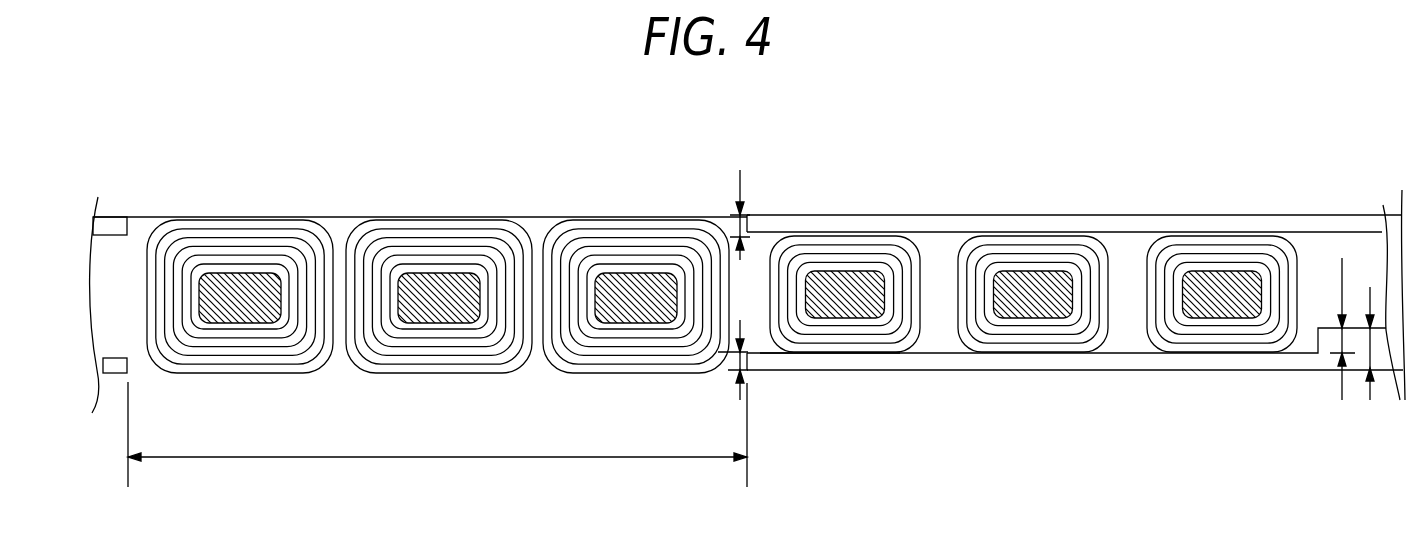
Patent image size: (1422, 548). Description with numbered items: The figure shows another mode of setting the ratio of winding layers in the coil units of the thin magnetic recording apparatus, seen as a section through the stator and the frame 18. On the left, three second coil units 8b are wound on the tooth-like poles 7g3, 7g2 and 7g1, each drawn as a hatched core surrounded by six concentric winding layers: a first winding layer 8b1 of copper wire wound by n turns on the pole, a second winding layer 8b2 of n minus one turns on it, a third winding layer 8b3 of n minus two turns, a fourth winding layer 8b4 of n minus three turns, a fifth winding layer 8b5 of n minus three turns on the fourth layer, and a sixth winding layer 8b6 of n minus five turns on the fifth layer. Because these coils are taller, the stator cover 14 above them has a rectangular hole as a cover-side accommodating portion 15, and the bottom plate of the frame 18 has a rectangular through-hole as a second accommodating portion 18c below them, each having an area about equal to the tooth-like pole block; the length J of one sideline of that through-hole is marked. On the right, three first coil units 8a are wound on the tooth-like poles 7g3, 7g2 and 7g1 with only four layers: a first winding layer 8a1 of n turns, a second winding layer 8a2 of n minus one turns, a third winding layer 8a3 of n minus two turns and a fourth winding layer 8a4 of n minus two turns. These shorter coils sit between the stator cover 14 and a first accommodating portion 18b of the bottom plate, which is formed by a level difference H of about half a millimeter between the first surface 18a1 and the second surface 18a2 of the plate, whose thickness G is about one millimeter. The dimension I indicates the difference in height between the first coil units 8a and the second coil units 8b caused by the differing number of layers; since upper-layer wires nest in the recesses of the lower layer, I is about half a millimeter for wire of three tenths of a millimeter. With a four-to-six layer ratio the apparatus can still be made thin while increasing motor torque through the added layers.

The cover-side accommodating portion 15 is at (133, 245).
The second accommodating portion 18c is at (143, 357).
The second coil unit 8b is at (438, 263).
The first winding layer 8b1 is at (497, 323).
The second winding layer 8b2 is at (467, 330).
The third winding layer 8b3 is at (390, 337).
The fourth winding layer 8b4 is at (410, 243).
The fifth winding layer 8b5 is at (353, 247).
The sixth winding layer 8b6 is at (348, 243).
The tooth-like pole 7g1 is at (644, 282).
The tooth-like pole 7g2 is at (445, 282).
The tooth-like pole 7g3 is at (244, 290).
The stator cover 14 is at (922, 216).
The first coil unit 8a is at (1033, 306).
The first winding layer 8a1 is at (1040, 320).
The second winding layer 8a2 is at (1047, 328).
The third winding layer 8a3 is at (1092, 324).
The fourth winding layer 8a4 is at (988, 346).
The frame 18 is at (1076, 313).
The first accommodating portion 18b is at (1125, 331).
The first surface 18a1 is at (1392, 199).
The second surface 18a2 is at (925, 355).
The length of one sideline of a rectangular through-hole J is at (437, 434).
The difference in dimension between the first and second coil units I is at (734, 293).
The level difference H is at (1339, 329).
The thickness of the bottom plate G is at (1362, 366).